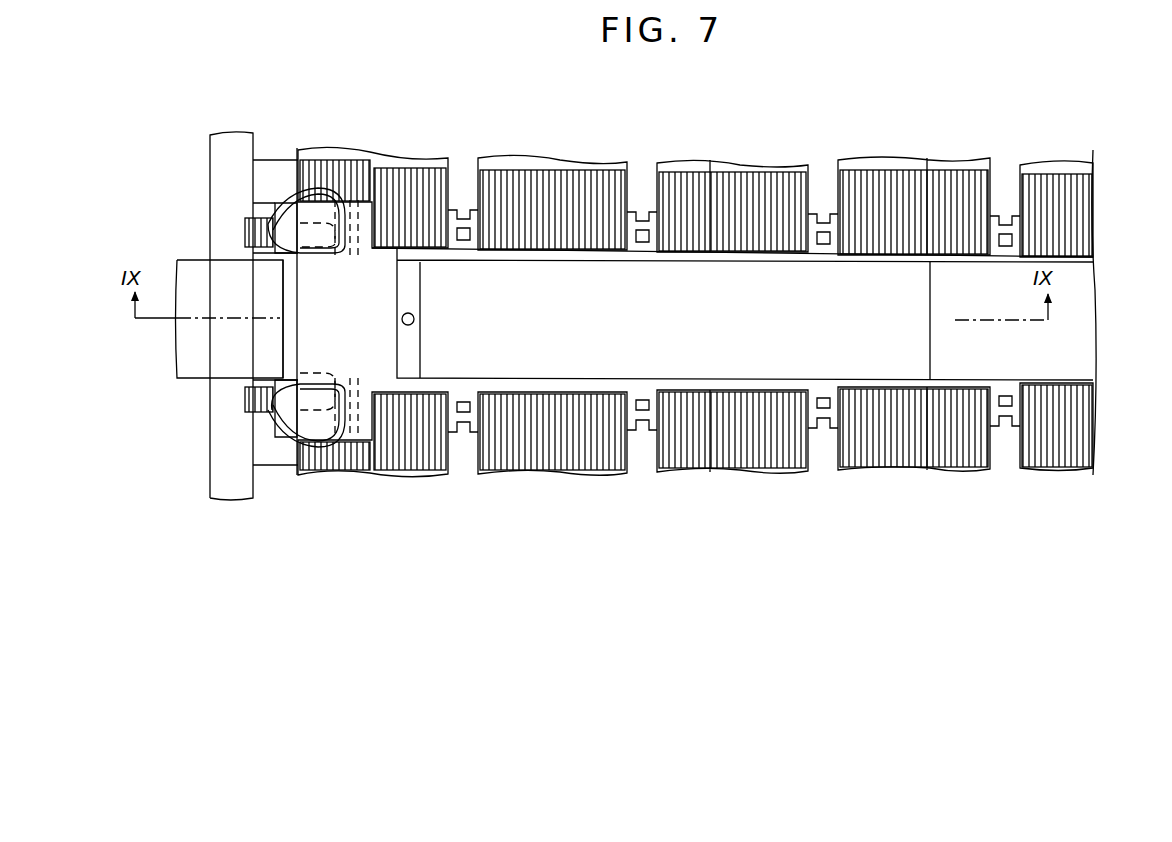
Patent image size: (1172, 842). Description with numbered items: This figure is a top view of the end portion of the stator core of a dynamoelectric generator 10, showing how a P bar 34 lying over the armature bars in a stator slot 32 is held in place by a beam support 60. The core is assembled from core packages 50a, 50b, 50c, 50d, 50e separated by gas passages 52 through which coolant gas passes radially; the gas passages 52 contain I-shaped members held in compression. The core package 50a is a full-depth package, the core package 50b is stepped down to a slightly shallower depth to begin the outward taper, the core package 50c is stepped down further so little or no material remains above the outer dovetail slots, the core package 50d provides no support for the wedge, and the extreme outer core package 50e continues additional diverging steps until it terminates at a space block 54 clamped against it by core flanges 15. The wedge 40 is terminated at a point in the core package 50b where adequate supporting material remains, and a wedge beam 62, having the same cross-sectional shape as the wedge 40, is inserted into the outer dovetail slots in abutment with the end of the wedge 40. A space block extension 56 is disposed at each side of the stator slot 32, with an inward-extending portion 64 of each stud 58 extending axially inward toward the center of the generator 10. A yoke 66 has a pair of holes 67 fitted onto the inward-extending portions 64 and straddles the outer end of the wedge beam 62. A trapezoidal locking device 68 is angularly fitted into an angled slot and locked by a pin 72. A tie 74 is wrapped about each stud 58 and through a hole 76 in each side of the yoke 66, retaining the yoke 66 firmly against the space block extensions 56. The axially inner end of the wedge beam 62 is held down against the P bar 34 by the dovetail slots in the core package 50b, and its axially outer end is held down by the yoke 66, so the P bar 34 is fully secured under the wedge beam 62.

The dynamoelectric generator 10 is at (672, 128).
The core flanges 15 is at (225, 468).
The stator slot 32 is at (218, 340).
The P bar 34 is at (212, 368).
The wedge 40 is at (1072, 353).
The core package 50a is at (1085, 165).
The core package 50b is at (915, 162).
The core package 50c is at (750, 165).
The core package 50d is at (560, 165).
The core package 50e is at (405, 160).
The gas passages 52 is at (1005, 180).
The space block 54 is at (272, 222).
The space block extension 56 is at (283, 215).
The stud 58 is at (247, 232).
The beam support 60 is at (932, 350).
The wedge beam 62 is at (905, 307).
The inward-extending portion 64 is at (306, 253).
The yoke 66 is at (325, 320).
The holes 67 is at (323, 380).
The trapezoidal locking device 68 is at (410, 300).
The pin 72 is at (415, 319).
The tie 74 is at (282, 435).
The hole 76 is at (348, 258).